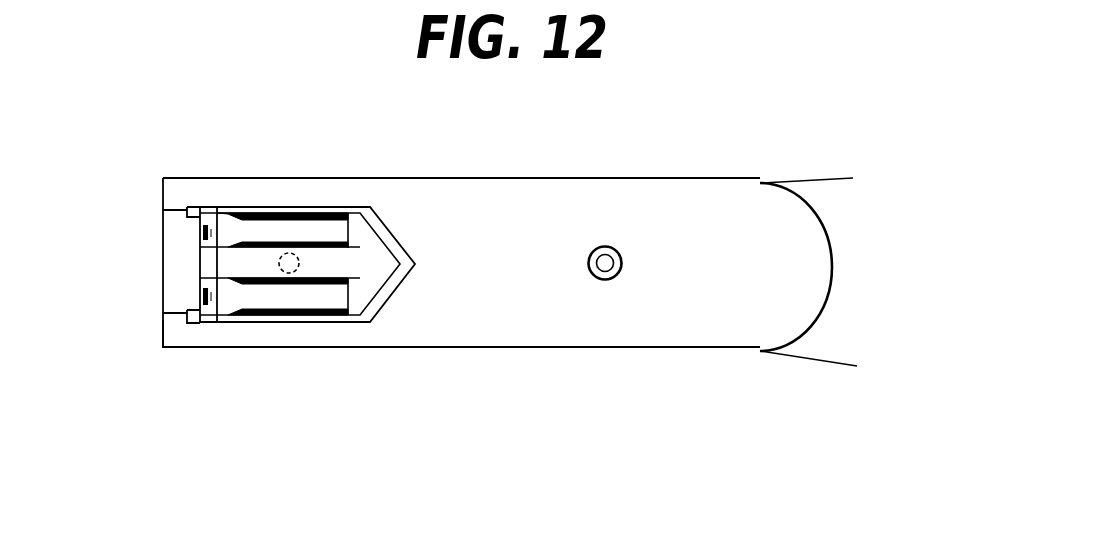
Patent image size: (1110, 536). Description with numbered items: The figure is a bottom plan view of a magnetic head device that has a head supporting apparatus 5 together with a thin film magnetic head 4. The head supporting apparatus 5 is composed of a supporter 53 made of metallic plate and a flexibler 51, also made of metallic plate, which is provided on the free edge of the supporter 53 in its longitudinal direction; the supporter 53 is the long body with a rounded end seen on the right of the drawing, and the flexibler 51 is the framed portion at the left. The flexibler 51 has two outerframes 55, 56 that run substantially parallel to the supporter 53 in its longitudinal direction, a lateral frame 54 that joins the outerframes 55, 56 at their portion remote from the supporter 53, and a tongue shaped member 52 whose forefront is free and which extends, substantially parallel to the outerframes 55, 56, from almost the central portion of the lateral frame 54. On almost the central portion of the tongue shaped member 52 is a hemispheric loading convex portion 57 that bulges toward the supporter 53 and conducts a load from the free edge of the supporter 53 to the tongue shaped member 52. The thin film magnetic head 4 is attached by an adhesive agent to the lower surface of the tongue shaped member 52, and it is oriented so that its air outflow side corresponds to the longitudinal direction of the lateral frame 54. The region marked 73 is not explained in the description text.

The thin film magnetic head 4 is at (285, 380).
The head supporting apparatus 5 is at (813, 394).
The flexibler 51 is at (152, 330).
The tongue shaped member 52 is at (375, 273).
The supporter 53 is at (798, 183).
The lateral frame 54 is at (177, 269).
The outerframe 55 is at (220, 188).
The outerframe 56 is at (345, 333).
The loading convex portion 57 is at (289, 258).
The board surface region 73 is at (445, 325).